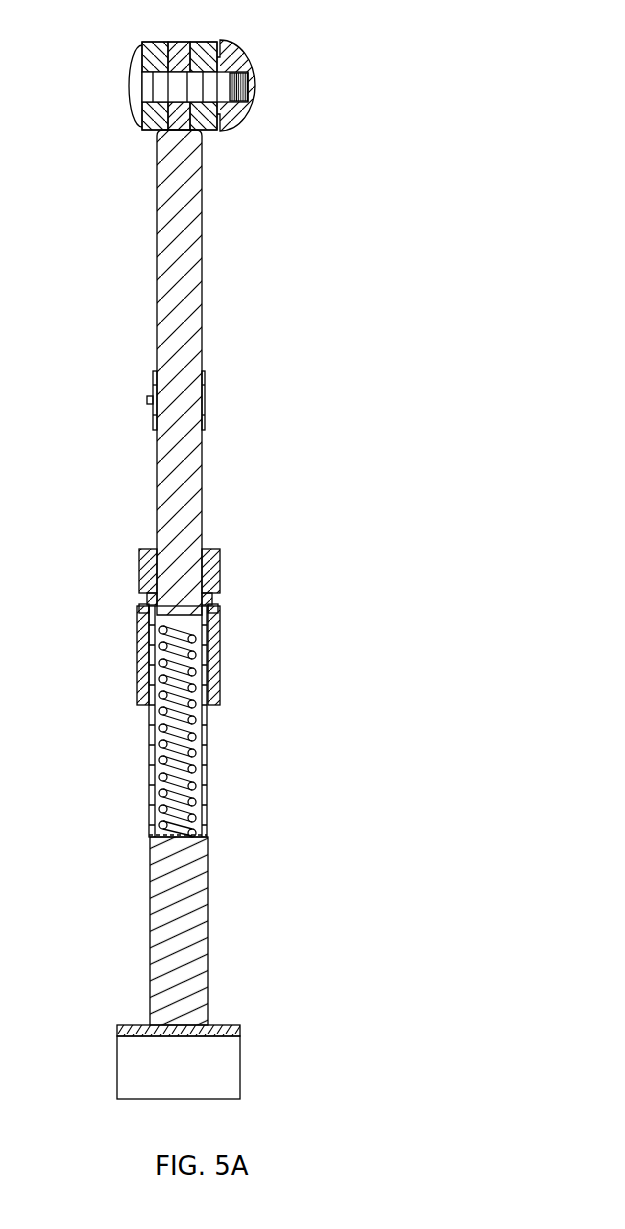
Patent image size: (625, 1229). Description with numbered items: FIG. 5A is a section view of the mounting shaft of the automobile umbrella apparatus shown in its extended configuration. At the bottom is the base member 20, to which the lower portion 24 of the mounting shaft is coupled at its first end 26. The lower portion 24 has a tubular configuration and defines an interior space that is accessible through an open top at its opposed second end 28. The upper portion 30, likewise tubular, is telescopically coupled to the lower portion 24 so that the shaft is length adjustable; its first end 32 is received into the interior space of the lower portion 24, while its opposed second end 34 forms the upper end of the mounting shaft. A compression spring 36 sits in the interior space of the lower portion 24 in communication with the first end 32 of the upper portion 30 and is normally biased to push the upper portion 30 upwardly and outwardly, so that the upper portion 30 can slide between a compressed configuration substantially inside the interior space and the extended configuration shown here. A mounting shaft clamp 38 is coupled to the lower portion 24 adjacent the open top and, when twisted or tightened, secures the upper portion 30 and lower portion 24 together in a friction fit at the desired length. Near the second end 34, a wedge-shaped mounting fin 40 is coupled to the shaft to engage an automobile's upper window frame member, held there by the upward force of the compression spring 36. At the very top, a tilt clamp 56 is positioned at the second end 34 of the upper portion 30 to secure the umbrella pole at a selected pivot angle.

The base member 20 is at (233, 1076).
The lower portion 24 is at (224, 862).
The first end 26 is at (192, 1013).
The second end 28 is at (198, 628).
The upper portion 30 is at (197, 307).
The first end 32 is at (180, 601).
The second end 34 is at (197, 159).
The compression spring 36 is at (193, 687).
The mounting shaft clamp 38 is at (148, 611).
The mounting fin 40 is at (205, 403).
The tilt clamp 56 is at (166, 65).